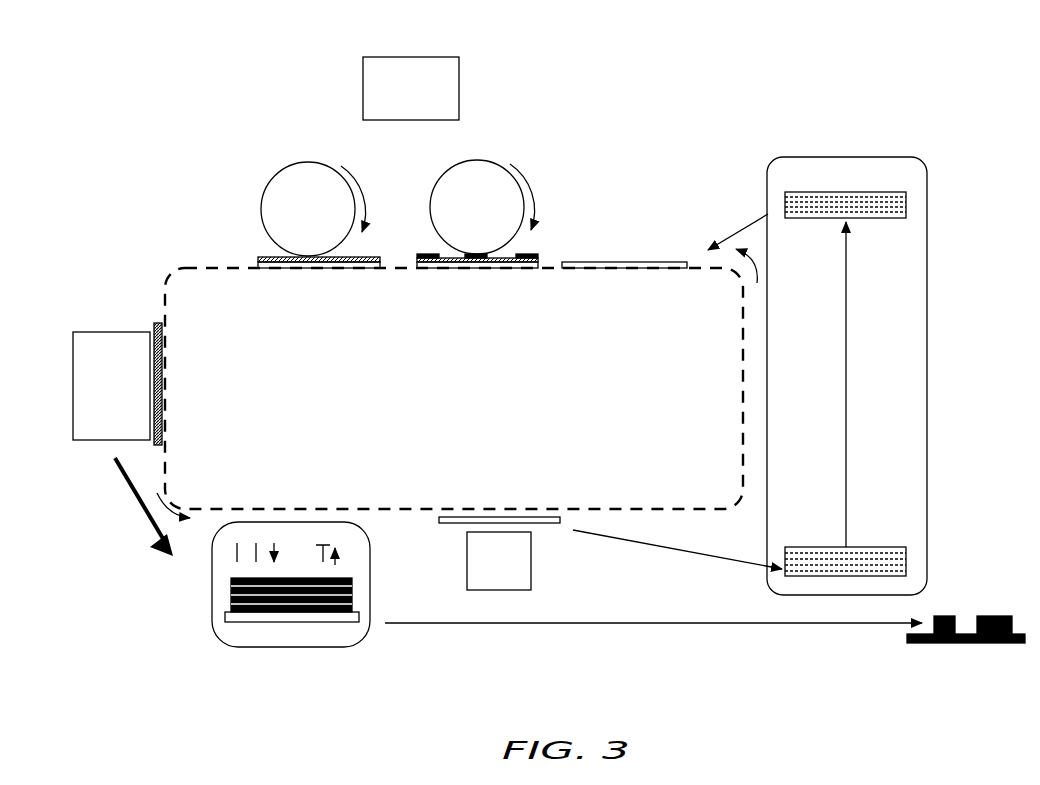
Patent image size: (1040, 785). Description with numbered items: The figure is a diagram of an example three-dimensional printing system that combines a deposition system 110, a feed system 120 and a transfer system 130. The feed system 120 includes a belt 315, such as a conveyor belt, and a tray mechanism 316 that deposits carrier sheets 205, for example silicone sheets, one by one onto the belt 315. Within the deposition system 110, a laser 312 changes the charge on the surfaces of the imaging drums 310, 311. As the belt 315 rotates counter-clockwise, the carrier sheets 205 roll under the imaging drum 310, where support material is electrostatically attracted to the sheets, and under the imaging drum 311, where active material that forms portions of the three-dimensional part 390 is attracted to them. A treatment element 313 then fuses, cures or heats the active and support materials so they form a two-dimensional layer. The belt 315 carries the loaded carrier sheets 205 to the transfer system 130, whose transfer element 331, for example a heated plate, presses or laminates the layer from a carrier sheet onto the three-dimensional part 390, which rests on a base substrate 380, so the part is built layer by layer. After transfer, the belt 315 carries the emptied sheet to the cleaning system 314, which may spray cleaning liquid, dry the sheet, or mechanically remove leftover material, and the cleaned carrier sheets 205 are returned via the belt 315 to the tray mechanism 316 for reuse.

The deposition system 110 is at (555, 358).
The imaging drum 311 is at (310, 162).
The imaging drum 310 is at (487, 160).
The laser 312 is at (413, 57).
The belt 315 is at (176, 268).
The treatment element 313 is at (118, 332).
The tray mechanism 316 is at (861, 353).
The carrier sheets 205 is at (848, 186).
The feed system 120 is at (752, 404).
The cleaning system 314 is at (531, 559).
The transfer element 331 is at (212, 588).
The 3D part 390 is at (337, 578).
The base substrate 380 is at (315, 622).
The transfer system 130 is at (591, 609).